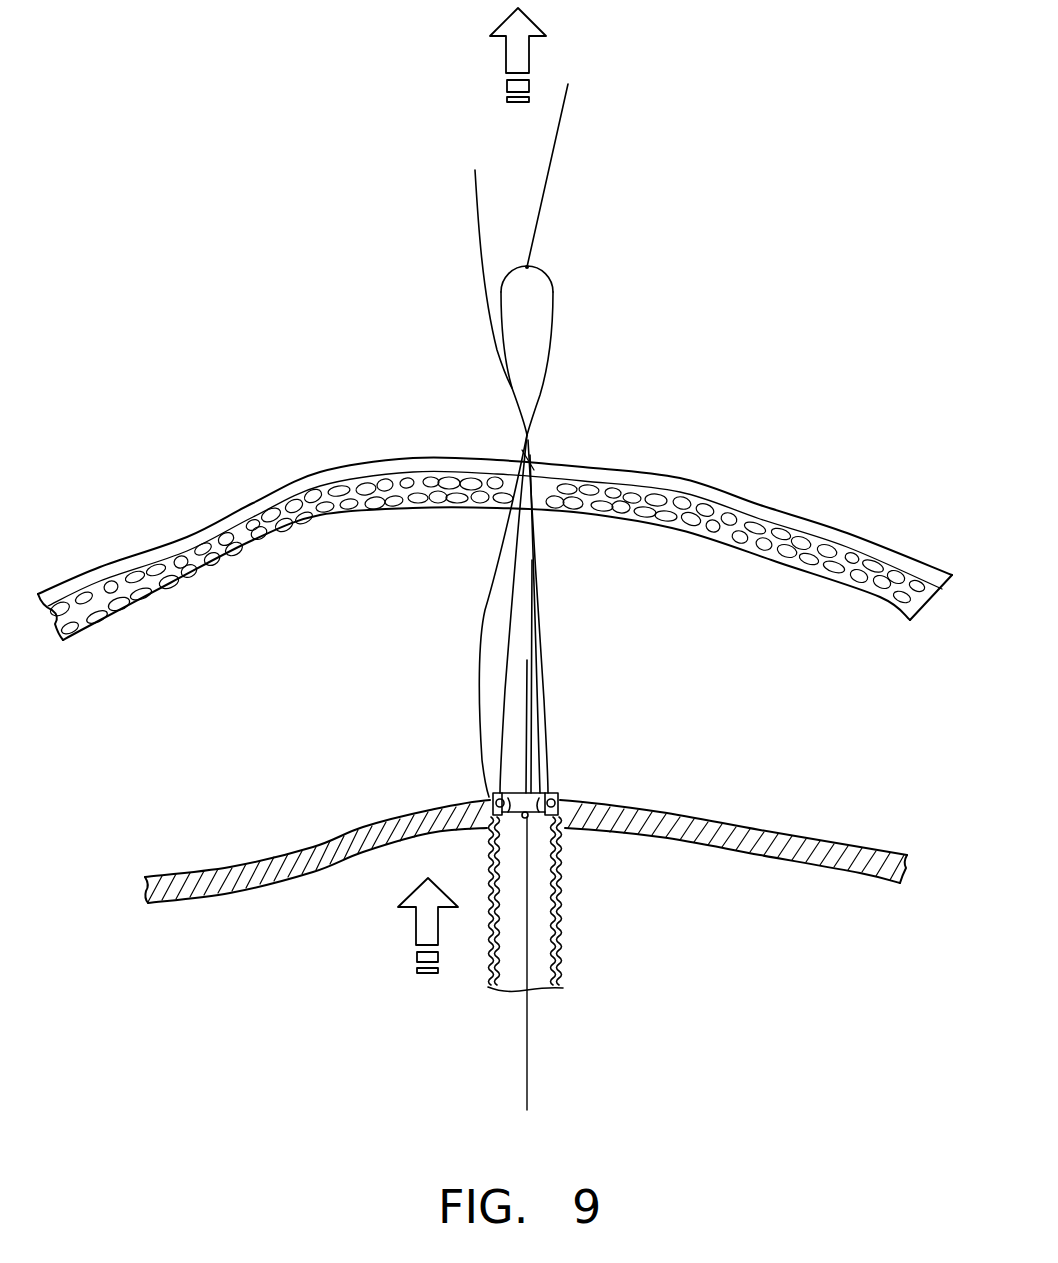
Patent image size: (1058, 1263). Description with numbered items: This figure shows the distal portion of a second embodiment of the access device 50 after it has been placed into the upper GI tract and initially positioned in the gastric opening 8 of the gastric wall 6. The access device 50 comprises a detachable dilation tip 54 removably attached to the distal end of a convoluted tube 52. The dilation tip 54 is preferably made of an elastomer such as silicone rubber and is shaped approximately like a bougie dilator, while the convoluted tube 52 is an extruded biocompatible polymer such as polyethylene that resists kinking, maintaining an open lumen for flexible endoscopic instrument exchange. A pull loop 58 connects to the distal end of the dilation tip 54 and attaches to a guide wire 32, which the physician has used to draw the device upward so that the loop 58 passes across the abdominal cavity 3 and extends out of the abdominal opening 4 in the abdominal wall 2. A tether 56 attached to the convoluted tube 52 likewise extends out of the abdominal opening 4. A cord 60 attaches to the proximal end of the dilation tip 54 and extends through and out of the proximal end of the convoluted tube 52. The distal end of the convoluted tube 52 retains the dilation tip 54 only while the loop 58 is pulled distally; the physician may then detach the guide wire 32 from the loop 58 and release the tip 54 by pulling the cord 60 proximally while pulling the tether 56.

The abdominal wall 2 is at (628, 460).
The abdominal cavity 3 is at (374, 675).
The abdominal opening 4 is at (532, 462).
The gastric wall 6 is at (668, 808).
The gastric opening 8 is at (490, 803).
The guide wire 32 is at (548, 190).
The access device 50 is at (552, 886).
The convoluted tube 52 is at (566, 960).
The dilation tip 54 is at (553, 678).
The tether 56 is at (474, 200).
The pull loop 58 is at (553, 325).
The cord 60 is at (527, 1058).